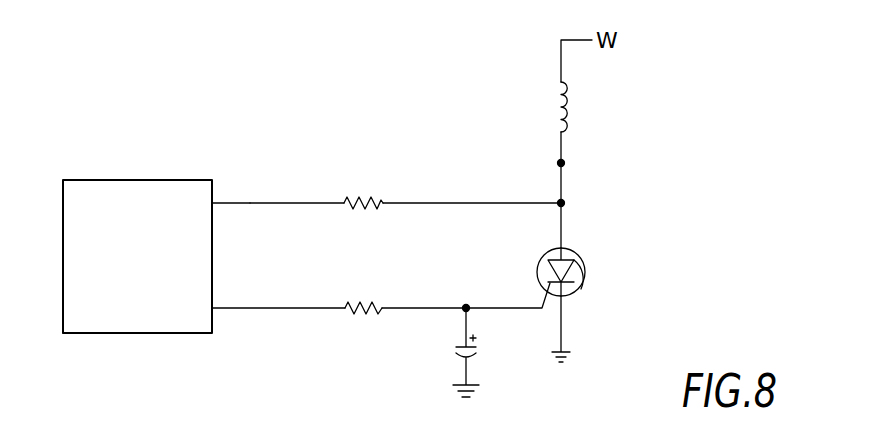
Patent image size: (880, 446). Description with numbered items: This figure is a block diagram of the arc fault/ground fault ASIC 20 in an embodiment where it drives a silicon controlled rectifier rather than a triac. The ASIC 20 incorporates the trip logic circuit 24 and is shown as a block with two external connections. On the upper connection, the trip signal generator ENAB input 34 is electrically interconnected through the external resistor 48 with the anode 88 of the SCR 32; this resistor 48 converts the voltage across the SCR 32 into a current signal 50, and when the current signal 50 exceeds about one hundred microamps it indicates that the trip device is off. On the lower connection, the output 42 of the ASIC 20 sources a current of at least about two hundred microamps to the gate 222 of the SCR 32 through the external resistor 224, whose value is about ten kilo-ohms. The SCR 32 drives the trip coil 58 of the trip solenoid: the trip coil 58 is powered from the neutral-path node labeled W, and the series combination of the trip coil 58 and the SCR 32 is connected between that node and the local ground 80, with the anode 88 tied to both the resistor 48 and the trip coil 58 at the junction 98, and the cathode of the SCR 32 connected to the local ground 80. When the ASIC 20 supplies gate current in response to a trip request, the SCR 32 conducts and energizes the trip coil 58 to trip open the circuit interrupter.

The ASIC 20 is at (120, 180).
The trip logic circuit 24 is at (108, 320).
The ENAB input 34 is at (212, 203).
The current signal 50 is at (285, 203).
The external resistor R1 48 is at (361, 209).
The output 42 is at (212, 308).
The external resistor R2' 224 is at (368, 313).
The gate 222 is at (541, 300).
The anode 88 is at (556, 251).
The SCR 32 is at (584, 284).
The local ground 80 is at (566, 353).
The trip coil 58 is at (570, 102).
The node 98 is at (564, 163).